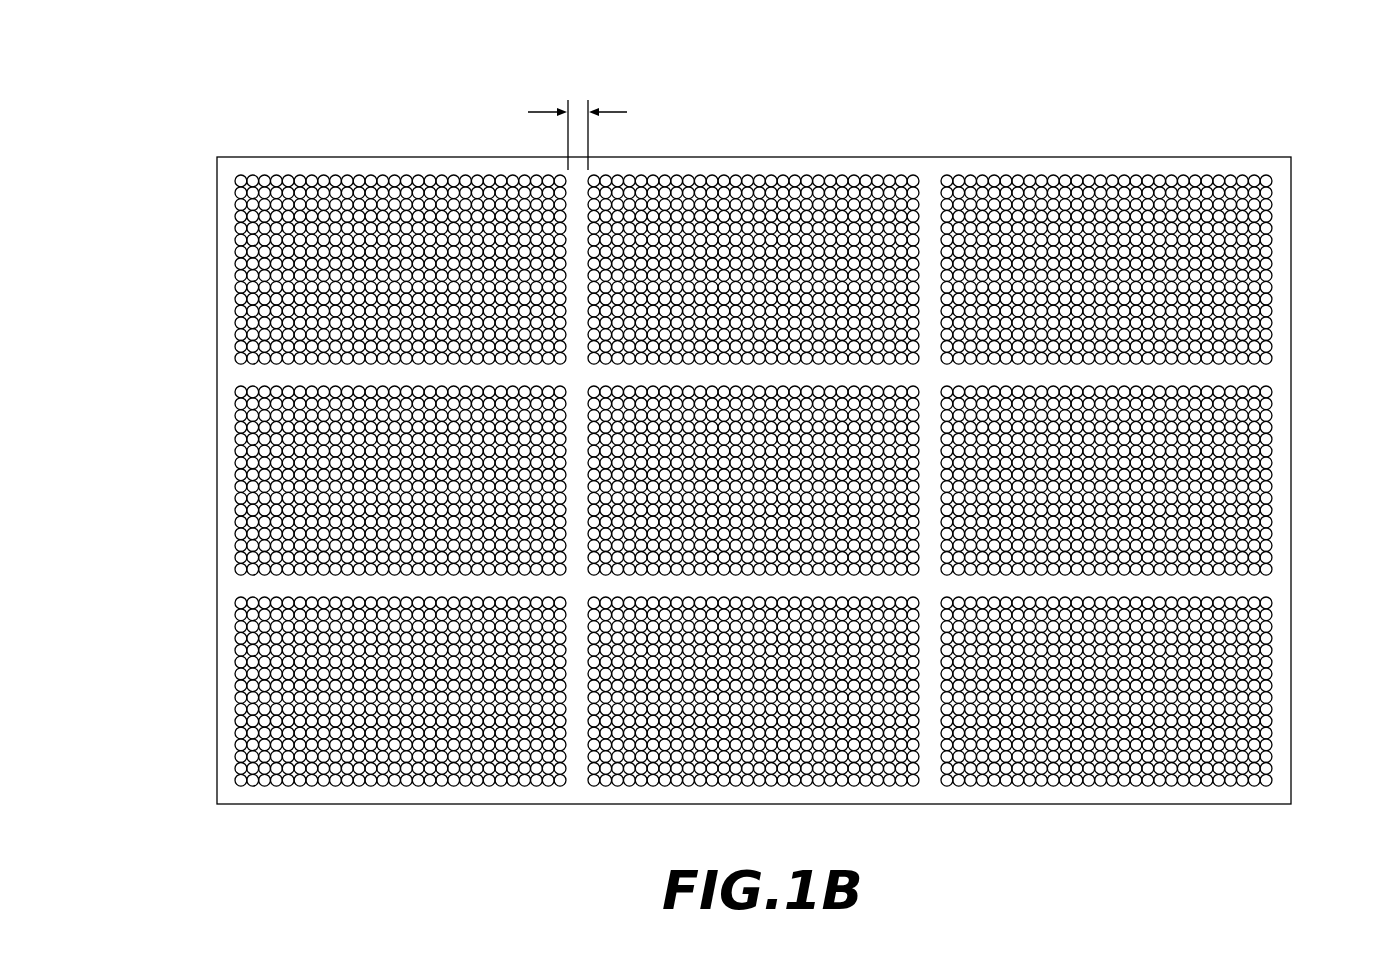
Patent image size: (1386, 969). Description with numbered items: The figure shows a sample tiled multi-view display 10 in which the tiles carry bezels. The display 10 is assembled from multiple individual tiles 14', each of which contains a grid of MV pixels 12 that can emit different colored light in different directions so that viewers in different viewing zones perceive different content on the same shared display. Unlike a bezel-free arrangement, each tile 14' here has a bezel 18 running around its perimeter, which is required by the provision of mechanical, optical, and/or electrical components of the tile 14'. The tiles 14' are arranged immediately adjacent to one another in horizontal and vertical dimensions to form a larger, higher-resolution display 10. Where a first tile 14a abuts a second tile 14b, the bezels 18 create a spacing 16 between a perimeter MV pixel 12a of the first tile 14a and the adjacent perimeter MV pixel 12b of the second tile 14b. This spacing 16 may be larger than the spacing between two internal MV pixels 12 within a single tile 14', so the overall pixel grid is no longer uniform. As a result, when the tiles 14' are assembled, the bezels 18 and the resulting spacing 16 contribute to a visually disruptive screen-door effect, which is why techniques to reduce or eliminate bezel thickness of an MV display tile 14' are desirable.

The multi-view display 10 is at (1258, 92).
The MV pixels 12 is at (1268, 207).
The perimeter MV pixel of the first tile 12a is at (561, 168).
The perimeter MV pixel of the second tile 12b is at (596, 168).
The first tile 14a is at (388, 172).
The second tile 14b is at (896, 172).
The tile 14' is at (1155, 480).
The spacing 16 is at (580, 105).
The bezel 18 is at (326, 165).